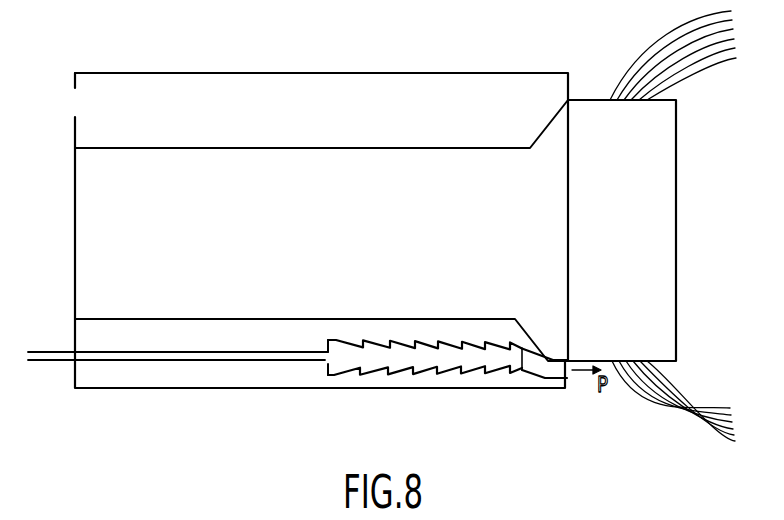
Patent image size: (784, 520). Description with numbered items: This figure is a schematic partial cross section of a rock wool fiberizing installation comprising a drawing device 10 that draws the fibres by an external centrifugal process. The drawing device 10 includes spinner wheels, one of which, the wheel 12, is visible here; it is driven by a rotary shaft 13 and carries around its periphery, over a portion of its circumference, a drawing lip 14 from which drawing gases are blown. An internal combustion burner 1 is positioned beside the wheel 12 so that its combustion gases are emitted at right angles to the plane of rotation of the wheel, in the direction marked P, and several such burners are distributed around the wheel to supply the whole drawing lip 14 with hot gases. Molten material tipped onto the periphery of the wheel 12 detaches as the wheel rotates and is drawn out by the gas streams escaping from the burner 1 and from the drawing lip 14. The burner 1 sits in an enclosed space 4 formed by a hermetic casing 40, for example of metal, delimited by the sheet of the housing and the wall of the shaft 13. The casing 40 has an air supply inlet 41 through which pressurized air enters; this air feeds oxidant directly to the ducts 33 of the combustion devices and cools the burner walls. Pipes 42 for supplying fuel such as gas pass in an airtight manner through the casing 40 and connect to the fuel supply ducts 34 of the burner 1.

The internal combustion burner 1 is at (447, 372).
The enclosed space 4 is at (190, 100).
The drawing device 10 is at (564, 456).
The spinner wheel 12 is at (657, 221).
The rotary shaft 13 is at (329, 164).
The drawing lip 14 is at (568, 378).
The oxidant supply ducts 33 is at (325, 343).
The fuel supply ducts 34 is at (332, 357).
The hermetic casing 40 is at (155, 390).
The air supply inlet 41 is at (72, 107).
The fuel supply pipes 42 is at (42, 362).